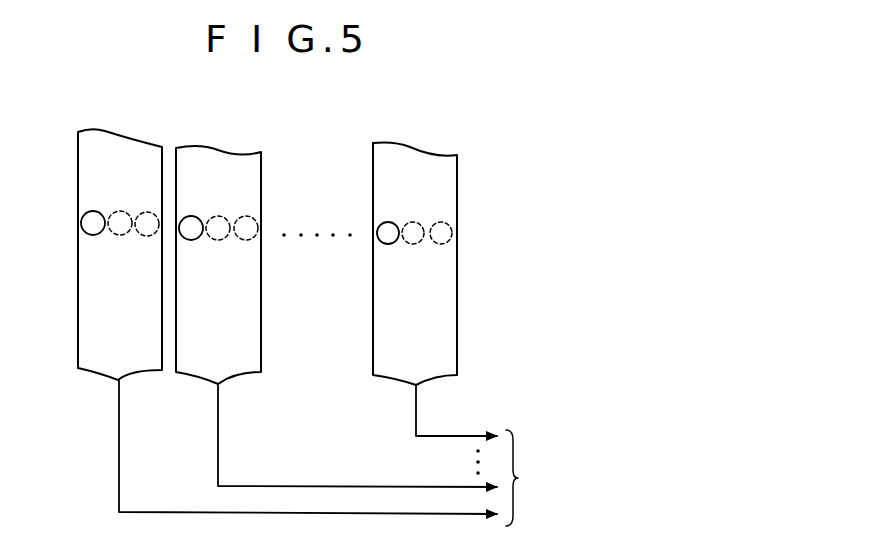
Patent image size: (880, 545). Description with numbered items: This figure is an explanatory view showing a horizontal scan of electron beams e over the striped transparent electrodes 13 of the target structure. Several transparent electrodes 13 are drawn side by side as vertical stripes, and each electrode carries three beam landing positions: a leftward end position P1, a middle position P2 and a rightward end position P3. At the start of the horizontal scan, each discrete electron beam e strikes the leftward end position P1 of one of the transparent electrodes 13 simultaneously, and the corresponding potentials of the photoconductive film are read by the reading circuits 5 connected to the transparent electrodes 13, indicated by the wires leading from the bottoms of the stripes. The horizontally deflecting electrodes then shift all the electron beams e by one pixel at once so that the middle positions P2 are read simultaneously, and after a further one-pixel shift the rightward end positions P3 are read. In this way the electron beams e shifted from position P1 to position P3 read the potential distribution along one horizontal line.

The transparent electrode 13 is at (120, 132).
The leftward end position P1 is at (92, 211).
The middle position P2 is at (120, 211).
The rightward end position P3 is at (147, 212).
The electron beam e is at (93, 235).
The reading circuit 5 is at (669, 478).